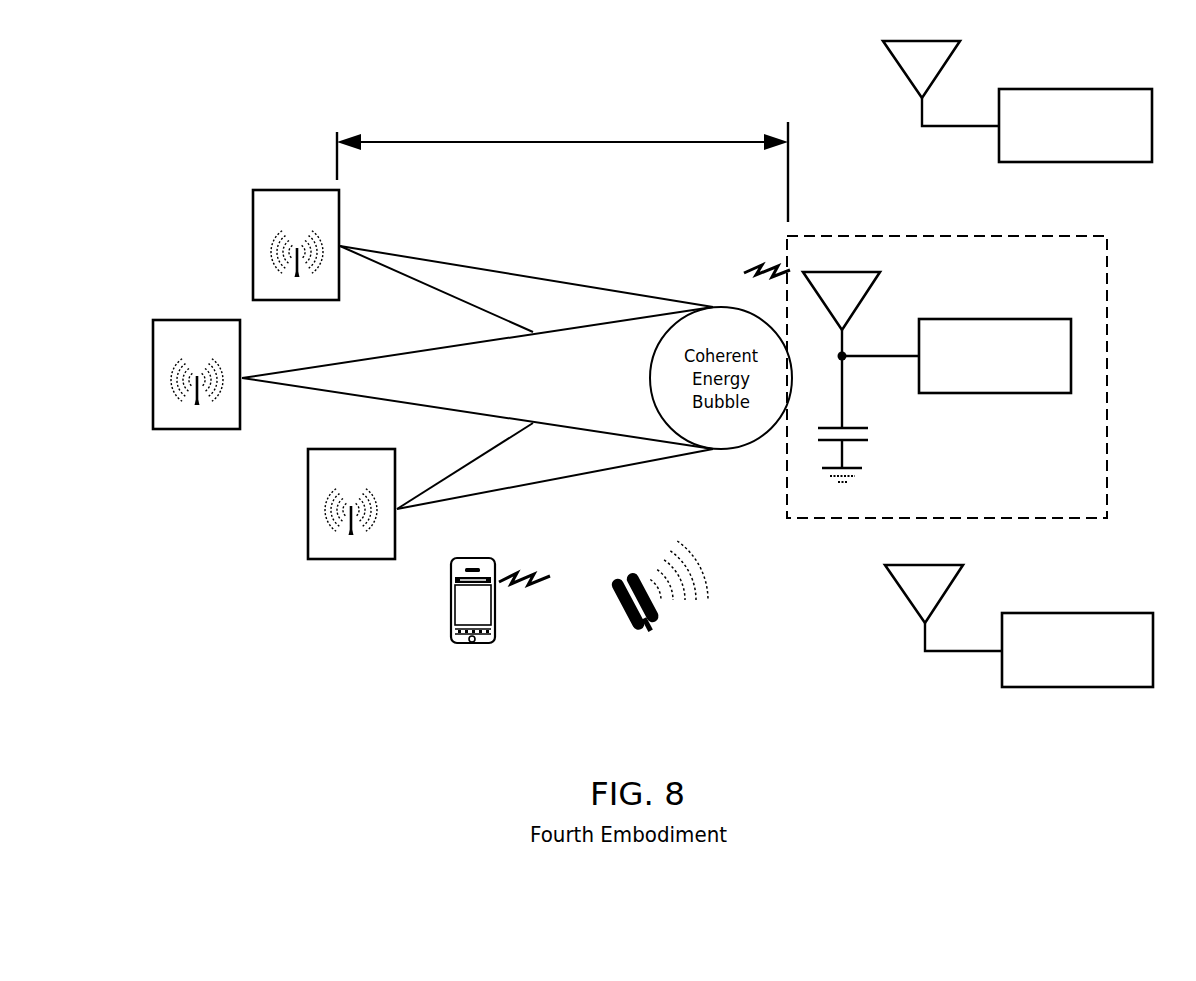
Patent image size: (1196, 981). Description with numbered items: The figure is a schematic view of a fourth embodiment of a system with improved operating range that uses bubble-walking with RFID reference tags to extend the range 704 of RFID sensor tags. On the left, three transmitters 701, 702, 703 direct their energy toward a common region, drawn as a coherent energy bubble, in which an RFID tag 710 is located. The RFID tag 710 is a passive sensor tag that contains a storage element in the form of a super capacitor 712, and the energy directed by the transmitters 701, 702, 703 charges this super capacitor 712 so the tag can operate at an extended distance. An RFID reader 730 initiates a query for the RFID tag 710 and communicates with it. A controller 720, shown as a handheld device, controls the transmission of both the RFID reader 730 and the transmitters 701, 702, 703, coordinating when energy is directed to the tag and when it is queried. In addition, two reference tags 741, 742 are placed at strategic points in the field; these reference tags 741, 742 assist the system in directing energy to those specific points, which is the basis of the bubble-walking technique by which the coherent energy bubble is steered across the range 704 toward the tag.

The transmitter 701 is at (280, 218).
The transmitter 702 is at (180, 348).
The transmitter 703 is at (334, 478).
The range 704 is at (553, 142).
The RFID tag 710 is at (1059, 344).
The super capacitor 712 is at (863, 435).
The controller 720 is at (486, 645).
The RFID reader 730 is at (643, 630).
The reference tag 741 is at (1139, 110).
The reference tag 742 is at (1140, 636).